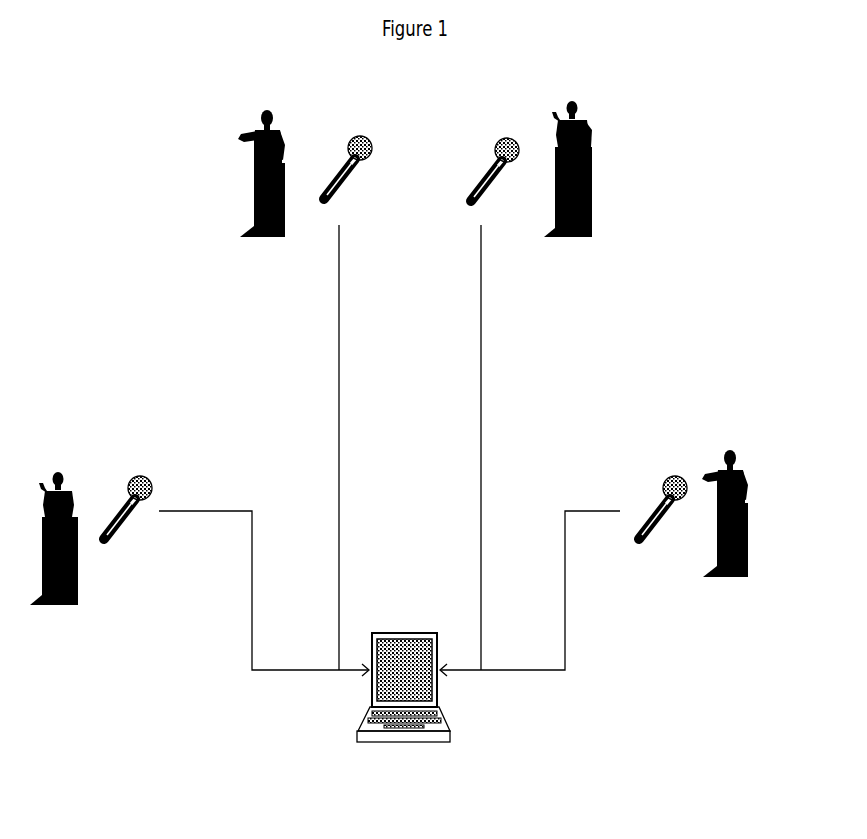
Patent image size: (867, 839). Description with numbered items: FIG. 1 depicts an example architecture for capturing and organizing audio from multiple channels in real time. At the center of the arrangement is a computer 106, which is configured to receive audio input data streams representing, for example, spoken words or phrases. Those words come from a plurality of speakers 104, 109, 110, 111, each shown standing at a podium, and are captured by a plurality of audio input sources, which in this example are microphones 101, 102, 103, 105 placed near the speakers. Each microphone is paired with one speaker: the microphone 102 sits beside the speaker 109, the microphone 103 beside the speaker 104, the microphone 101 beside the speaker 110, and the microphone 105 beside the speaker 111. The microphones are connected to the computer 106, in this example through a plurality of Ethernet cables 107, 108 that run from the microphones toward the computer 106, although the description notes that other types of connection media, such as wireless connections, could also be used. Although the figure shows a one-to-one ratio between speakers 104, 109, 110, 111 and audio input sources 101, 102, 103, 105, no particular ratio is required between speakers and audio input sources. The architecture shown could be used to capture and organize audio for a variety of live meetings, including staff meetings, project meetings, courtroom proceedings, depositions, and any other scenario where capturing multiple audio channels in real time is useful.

The microphone 101 is at (128, 530).
The microphone 102 is at (348, 403).
The microphone 103 is at (495, 404).
The speaker 104 is at (568, 149).
The microphone 105 is at (663, 528).
The computer 106 is at (403, 701).
The Ethernet cable 107 is at (264, 593).
The Ethernet cable 108 is at (530, 593).
The speaker 109 is at (263, 149).
The speaker 110 is at (54, 518).
The speaker 111 is at (725, 489).